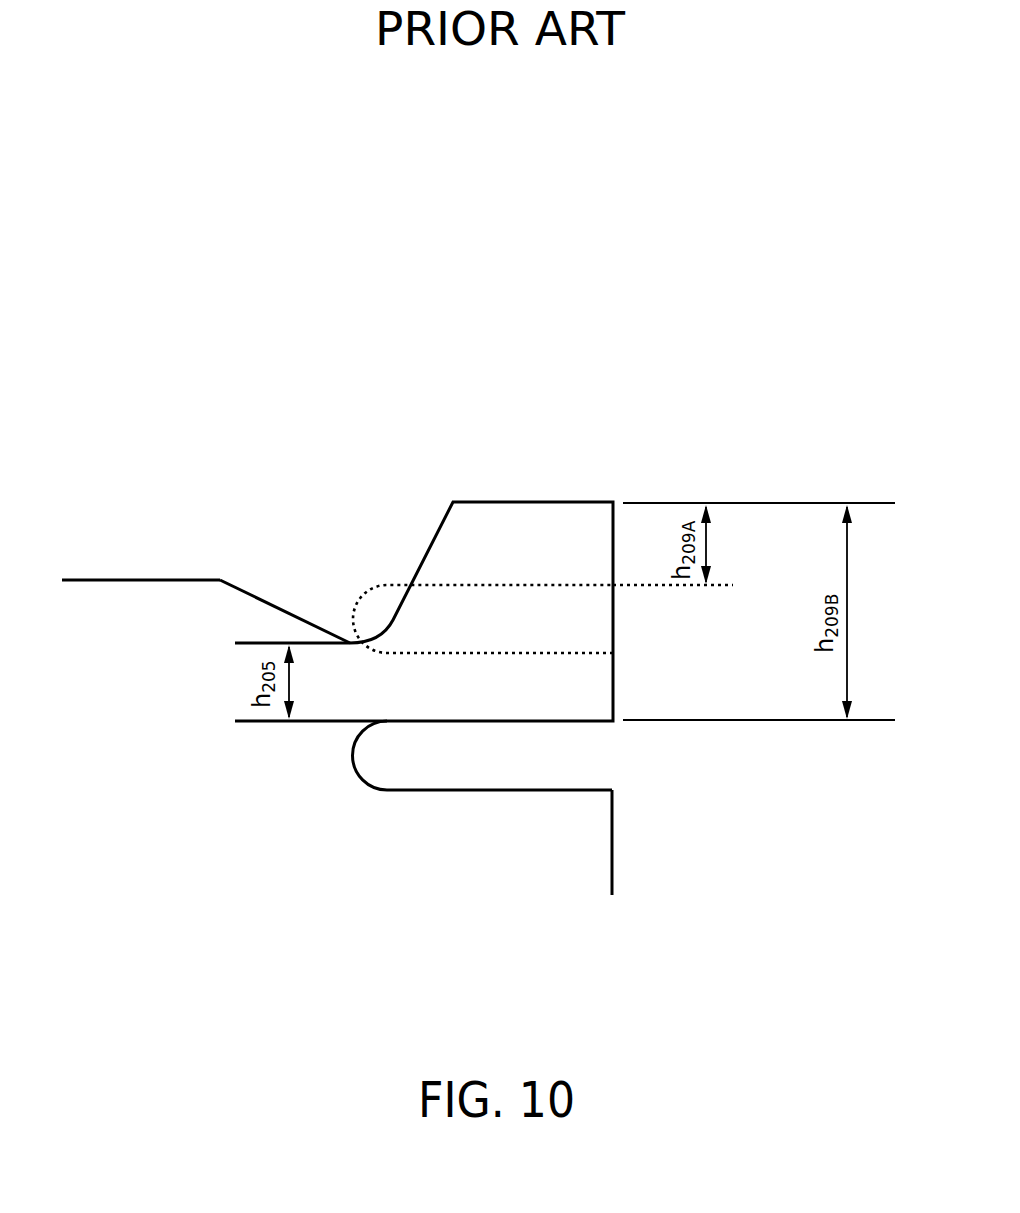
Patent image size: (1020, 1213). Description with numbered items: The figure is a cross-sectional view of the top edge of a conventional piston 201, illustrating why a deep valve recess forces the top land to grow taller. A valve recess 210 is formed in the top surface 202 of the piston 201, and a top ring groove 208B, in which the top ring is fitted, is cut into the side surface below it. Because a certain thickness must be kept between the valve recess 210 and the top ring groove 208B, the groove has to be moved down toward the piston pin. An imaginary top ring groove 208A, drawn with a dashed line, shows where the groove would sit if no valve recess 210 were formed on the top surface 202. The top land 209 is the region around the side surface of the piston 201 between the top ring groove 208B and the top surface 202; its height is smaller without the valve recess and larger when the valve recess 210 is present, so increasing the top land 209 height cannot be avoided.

The top surface 202 is at (118, 393).
The valve recess 210 is at (310, 583).
The top land 209 is at (612, 680).
The imaginary top ring groove 208A is at (560, 586).
The top ring groove 208B is at (443, 782).
The piston 201 is at (620, 899).